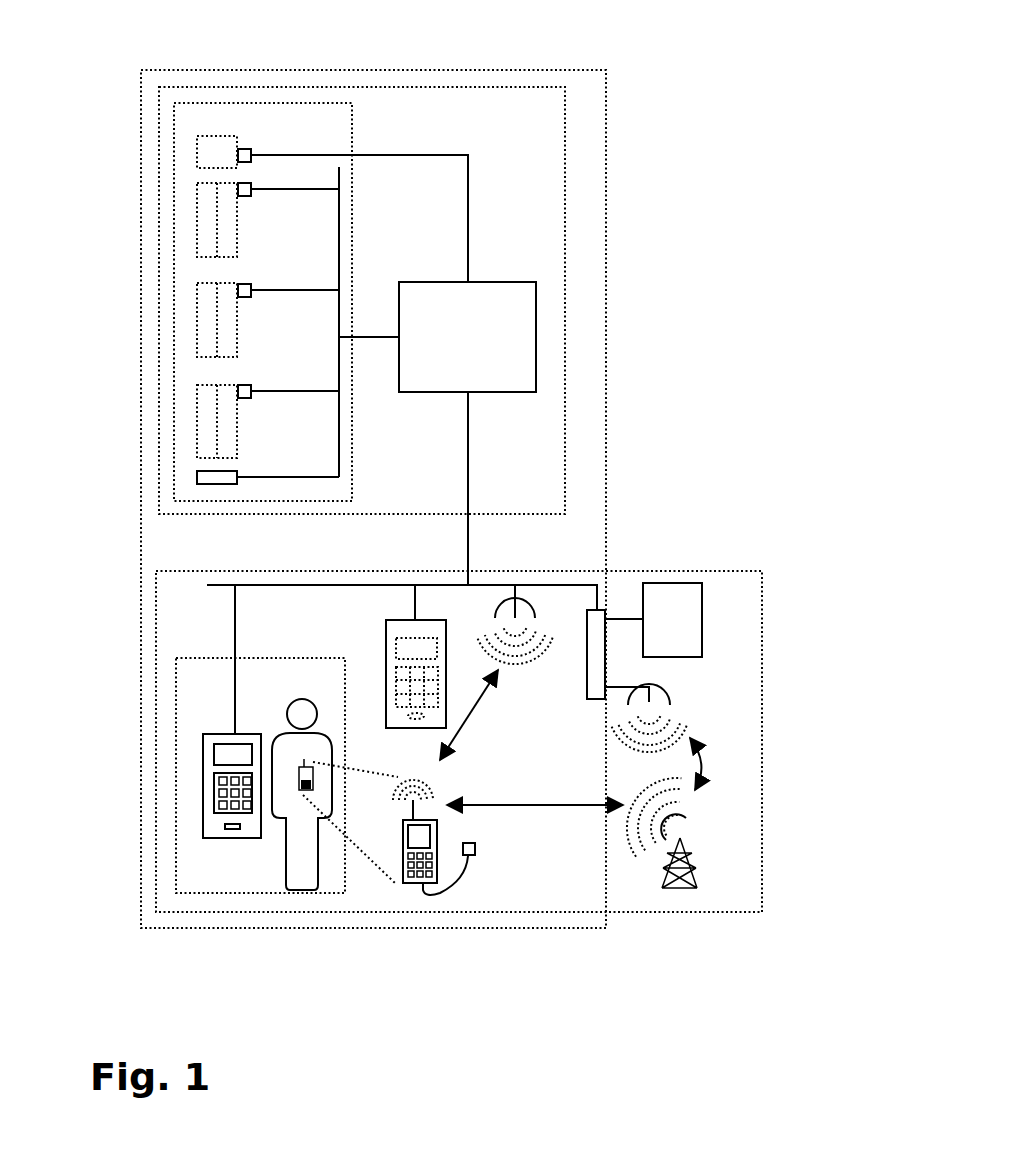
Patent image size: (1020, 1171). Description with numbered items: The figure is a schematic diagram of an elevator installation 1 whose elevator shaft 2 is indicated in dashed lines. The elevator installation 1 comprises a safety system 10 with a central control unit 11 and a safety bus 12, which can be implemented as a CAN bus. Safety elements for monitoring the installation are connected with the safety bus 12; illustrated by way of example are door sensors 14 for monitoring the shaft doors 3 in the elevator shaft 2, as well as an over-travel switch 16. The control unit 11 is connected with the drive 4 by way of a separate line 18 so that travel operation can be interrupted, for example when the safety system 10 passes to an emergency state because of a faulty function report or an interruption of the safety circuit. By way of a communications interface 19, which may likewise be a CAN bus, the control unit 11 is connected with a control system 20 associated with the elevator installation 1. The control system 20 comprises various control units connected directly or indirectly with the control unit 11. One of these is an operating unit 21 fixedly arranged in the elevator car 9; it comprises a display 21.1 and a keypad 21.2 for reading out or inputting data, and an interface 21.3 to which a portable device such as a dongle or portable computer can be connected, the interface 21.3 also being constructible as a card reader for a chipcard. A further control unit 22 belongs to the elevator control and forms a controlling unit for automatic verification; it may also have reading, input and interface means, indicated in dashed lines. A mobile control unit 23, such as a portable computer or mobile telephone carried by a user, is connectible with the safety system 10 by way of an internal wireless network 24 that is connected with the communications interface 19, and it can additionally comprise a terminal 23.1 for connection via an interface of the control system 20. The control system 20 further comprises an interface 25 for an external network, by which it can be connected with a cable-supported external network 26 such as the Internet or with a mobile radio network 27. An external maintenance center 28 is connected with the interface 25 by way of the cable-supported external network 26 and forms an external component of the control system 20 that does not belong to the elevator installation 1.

The elevator installation 1 is at (632, 87).
The elevator shaft 2 is at (263, 302).
The shaft doors 3 is at (207, 447).
The drive 4 is at (223, 150).
The elevator car 9 is at (287, 775).
The safety system 10 is at (632, 149).
The central control unit 11 is at (467, 337).
The safety bus 12 is at (340, 262).
The door sensors 14 is at (242, 385).
The over-travel switch 16 is at (212, 480).
The separate line 18 is at (470, 207).
The communications interface 19 is at (480, 587).
The control system 20 is at (702, 565).
The operating unit 21 is at (223, 733).
The display 21.1 is at (223, 760).
The keypad 21.2 is at (212, 790).
The interface 21.3 is at (228, 832).
The control unit of an elevator control 22 is at (386, 636).
The mobile control unit 23 is at (417, 883).
The terminal 23.1 is at (475, 853).
The internal wireless network 24 is at (522, 645).
The interface for an external network 25 is at (605, 655).
The cable-supported external network 26 is at (622, 617).
The mobile radio network 27 is at (652, 688).
The external maintenance center 28 is at (673, 625).